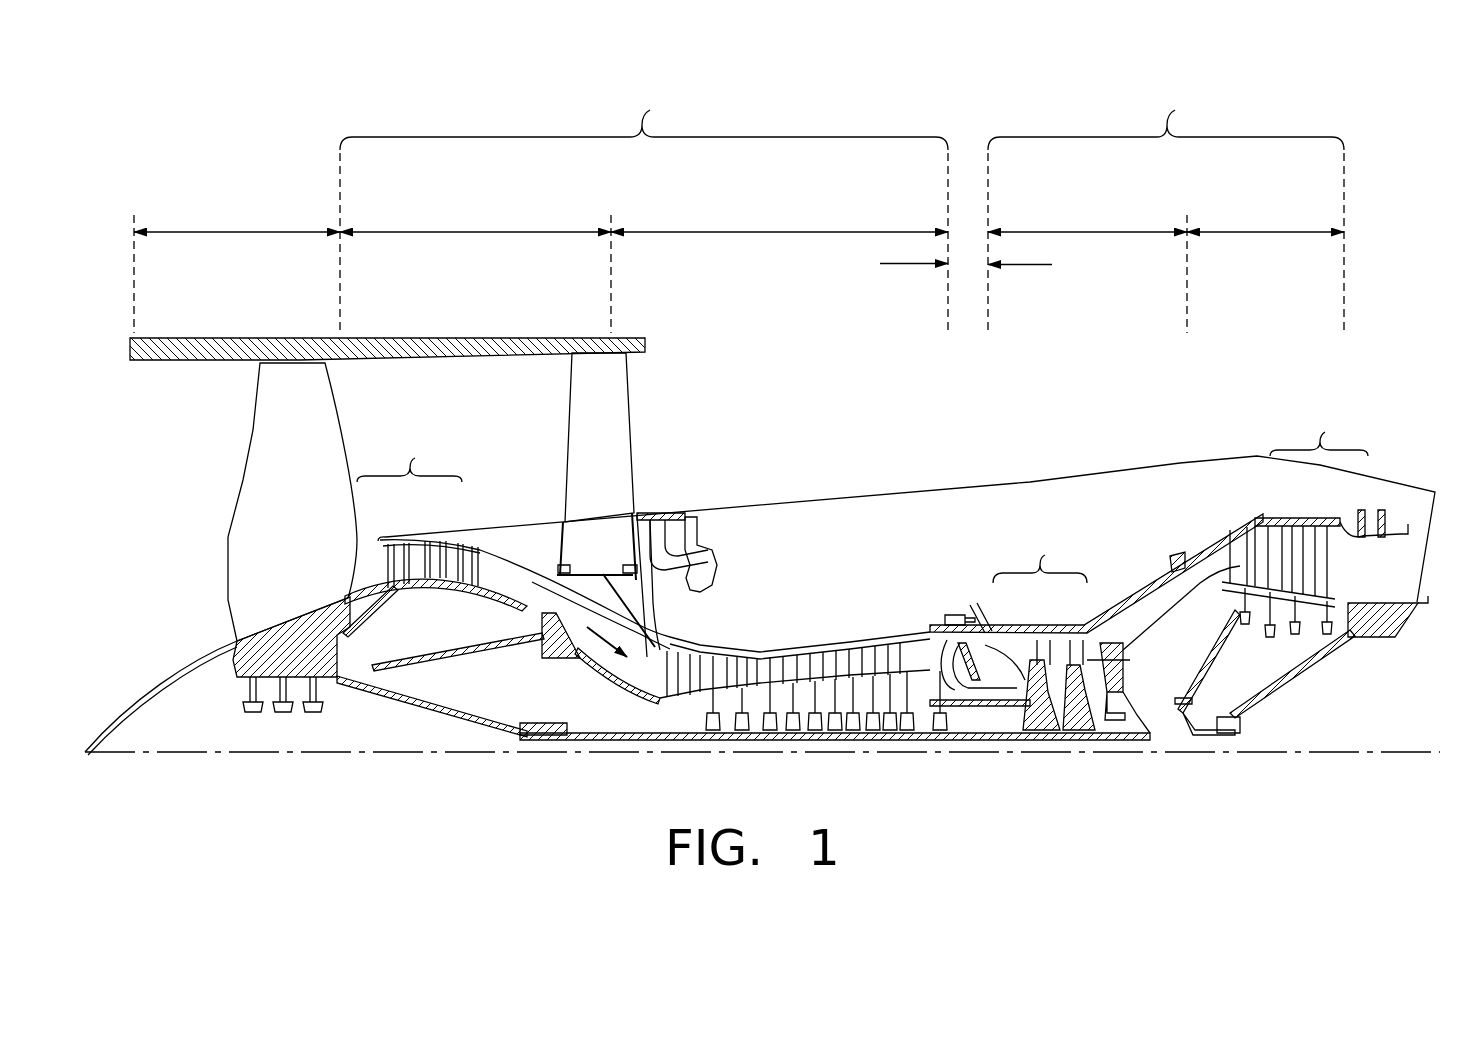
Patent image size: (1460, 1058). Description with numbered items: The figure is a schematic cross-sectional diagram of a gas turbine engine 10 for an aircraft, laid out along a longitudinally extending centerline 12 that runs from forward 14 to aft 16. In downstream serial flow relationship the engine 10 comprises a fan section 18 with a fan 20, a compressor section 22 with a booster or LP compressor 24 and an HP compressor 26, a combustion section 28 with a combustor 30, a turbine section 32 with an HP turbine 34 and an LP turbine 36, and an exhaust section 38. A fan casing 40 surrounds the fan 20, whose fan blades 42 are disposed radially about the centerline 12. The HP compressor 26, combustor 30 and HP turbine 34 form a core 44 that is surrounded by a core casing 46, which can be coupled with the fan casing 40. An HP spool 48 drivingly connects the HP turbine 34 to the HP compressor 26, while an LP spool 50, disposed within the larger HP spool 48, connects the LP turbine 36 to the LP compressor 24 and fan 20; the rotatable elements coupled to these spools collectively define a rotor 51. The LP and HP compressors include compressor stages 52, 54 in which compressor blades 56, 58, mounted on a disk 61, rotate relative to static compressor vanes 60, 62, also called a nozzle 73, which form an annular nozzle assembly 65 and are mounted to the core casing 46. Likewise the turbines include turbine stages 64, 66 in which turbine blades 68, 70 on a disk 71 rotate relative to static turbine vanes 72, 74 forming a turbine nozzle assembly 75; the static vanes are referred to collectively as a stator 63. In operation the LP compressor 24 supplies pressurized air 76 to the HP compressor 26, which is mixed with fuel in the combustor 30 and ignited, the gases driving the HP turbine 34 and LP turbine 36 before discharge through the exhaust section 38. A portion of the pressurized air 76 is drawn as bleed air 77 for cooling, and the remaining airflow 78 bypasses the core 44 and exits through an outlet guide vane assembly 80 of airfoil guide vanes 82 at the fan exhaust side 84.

The engine 10 is at (1357, 262).
The centerline 12 is at (215, 760).
The forward 14 is at (168, 477).
The aft 16 is at (1453, 572).
The fan section 18 is at (235, 232).
The fan 20 is at (213, 599).
The compressor section 22 is at (650, 110).
The LP compressor 24 is at (485, 232).
The HP compressor 26 is at (785, 232).
The combustion section 28 is at (893, 270).
The combustor 30 is at (992, 643).
The turbine section 32 is at (1175, 110).
The HP turbine 34 is at (1088, 232).
The LP turbine 36 is at (1262, 232).
The exhaust section 38 is at (1407, 550).
The fan casing 40 is at (370, 338).
The fan blades 42 is at (310, 410).
The core 44 is at (907, 525).
The core casing 46 is at (1170, 565).
The HP spool 48 is at (958, 705).
The LP spool 50 is at (543, 740).
The rotor 51 is at (808, 747).
The compressor stages 52 is at (415, 459).
The compressor stages 54 is at (777, 633).
The compressor blades 56 is at (423, 560).
The compressor blades 58 is at (700, 628).
The compressor vanes 60 is at (405, 545).
The disk 61 is at (437, 592).
The compressor vanes 62 is at (700, 605).
The stator 63 is at (677, 710).
The turbine stages 64 is at (1045, 556).
The nozzle assembly 65 is at (395, 585).
The turbine stages 66 is at (1325, 432).
The turbine blades 68 is at (1043, 653).
The turbine blades 70 is at (1333, 537).
The disk 71 is at (1242, 597).
The turbine vanes 72 is at (1030, 645).
The nozzle 73 is at (990, 648).
The turbine vanes 74 is at (1310, 533).
The turbine nozzle assembly 75 is at (1218, 557).
The pressurized air 76 is at (578, 653).
The bleed air 77 is at (830, 597).
The airflow 78 is at (672, 415).
The outlet guide vane assembly 80 is at (648, 478).
The airfoil guide vanes 82 is at (575, 452).
The fan exhaust side 84 is at (647, 388).